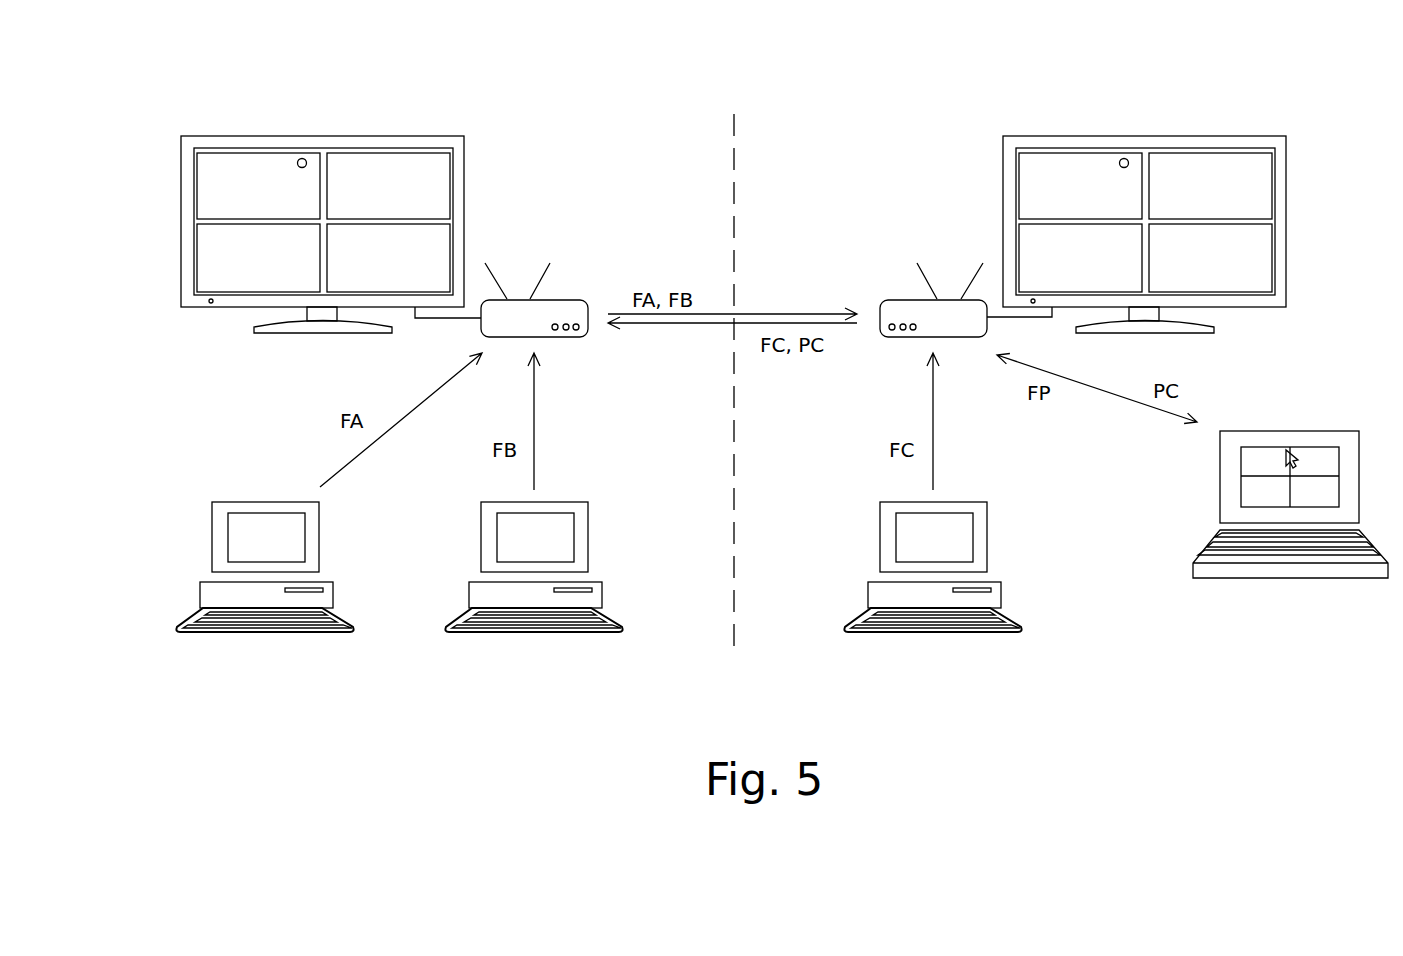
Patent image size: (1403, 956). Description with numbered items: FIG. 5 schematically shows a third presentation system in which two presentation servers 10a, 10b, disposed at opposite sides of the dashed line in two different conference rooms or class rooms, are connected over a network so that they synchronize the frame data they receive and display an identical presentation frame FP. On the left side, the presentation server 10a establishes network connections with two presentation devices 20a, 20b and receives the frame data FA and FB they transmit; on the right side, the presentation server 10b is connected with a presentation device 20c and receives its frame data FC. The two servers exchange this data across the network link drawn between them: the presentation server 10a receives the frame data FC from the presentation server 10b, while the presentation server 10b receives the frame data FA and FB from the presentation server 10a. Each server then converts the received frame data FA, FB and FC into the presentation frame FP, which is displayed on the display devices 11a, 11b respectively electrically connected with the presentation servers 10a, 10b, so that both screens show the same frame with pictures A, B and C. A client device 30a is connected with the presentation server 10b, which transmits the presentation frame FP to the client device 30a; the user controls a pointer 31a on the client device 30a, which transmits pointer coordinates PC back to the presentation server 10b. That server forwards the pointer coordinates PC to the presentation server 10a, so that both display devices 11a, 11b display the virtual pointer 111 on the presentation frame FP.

The display device 11a is at (232, 135).
The display device 11b is at (1052, 135).
The virtual pointer 111 is at (301, 158).
The presentation server 10a is at (563, 298).
The presentation server 10b is at (903, 298).
The presentation device 20a is at (242, 500).
The presentation device 20b is at (555, 500).
The presentation device 20c is at (955, 500).
The client device 30a is at (1267, 430).
The pointer 31a is at (1292, 450).
The presentation frame FP is at (208, 191).